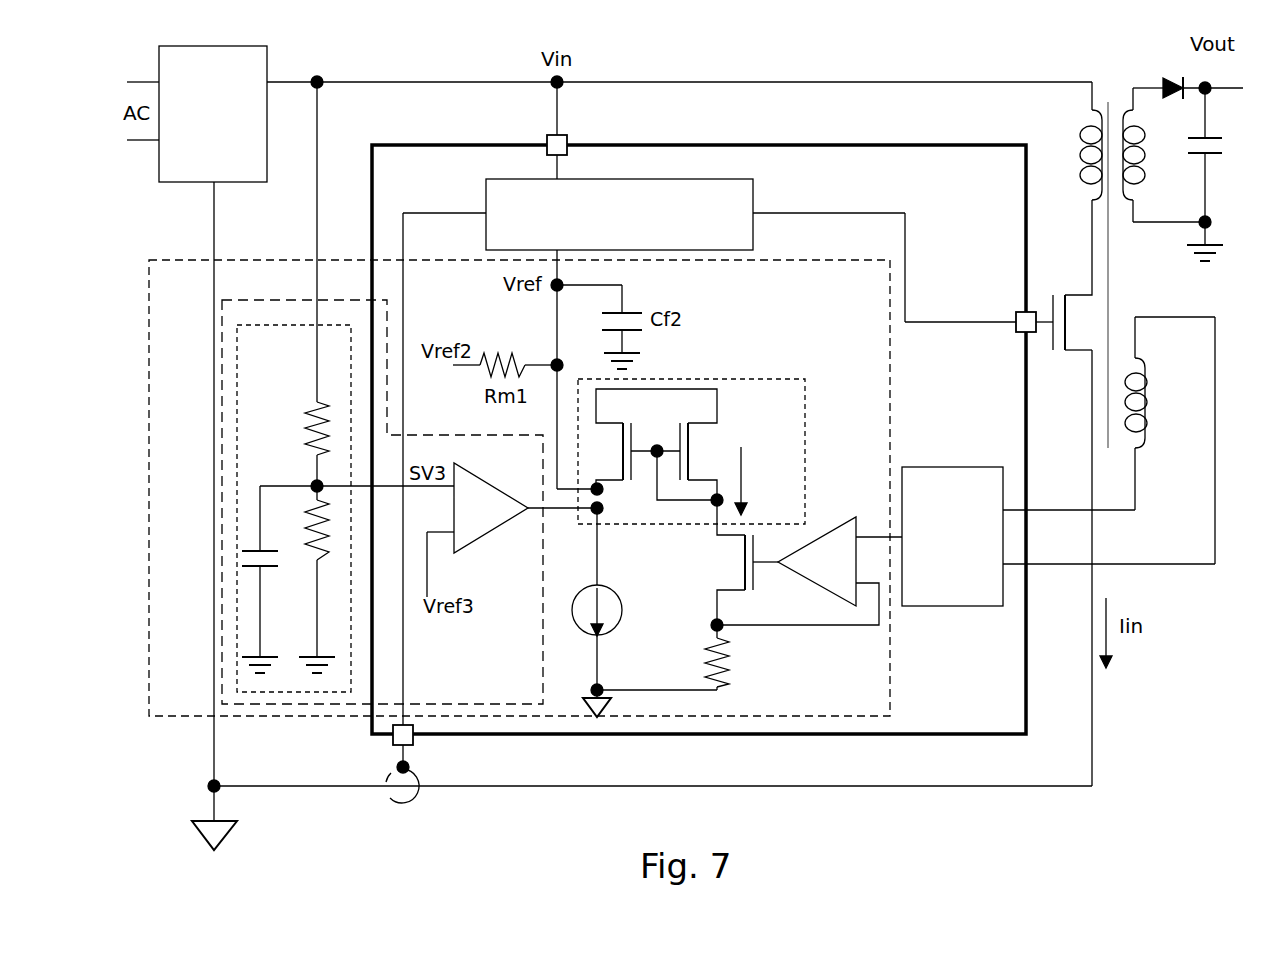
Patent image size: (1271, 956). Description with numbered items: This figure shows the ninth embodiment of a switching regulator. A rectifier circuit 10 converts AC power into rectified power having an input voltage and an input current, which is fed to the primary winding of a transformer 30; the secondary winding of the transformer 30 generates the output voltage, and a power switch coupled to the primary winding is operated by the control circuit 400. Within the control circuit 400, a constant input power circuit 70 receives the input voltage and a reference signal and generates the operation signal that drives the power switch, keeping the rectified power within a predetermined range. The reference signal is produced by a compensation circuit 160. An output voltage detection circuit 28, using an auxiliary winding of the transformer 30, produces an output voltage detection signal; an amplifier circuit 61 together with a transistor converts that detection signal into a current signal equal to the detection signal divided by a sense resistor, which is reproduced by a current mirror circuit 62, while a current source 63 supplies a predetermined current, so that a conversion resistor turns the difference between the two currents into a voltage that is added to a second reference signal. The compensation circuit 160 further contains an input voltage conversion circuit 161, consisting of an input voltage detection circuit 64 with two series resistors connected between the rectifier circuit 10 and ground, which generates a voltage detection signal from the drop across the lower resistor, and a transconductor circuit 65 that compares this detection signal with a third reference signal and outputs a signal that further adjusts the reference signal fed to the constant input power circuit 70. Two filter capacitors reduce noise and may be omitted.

The rectifier circuit 10 is at (197, 114).
The transformer 30 is at (1116, 84).
The control circuit 400 is at (704, 440).
The constant input power circuit 70 is at (619, 214).
The input voltage detection circuit 64 is at (345, 387).
The compensation circuit 160 is at (519, 488).
The input voltage conversion circuit 161 is at (382, 502).
The current mirror circuit 62 is at (691, 451).
The amplifier circuit 61 is at (826, 527).
The transconductor circuit Gm 65 is at (487, 538).
The current source 63 is at (618, 632).
The output voltage detection circuit 28 is at (952, 536).